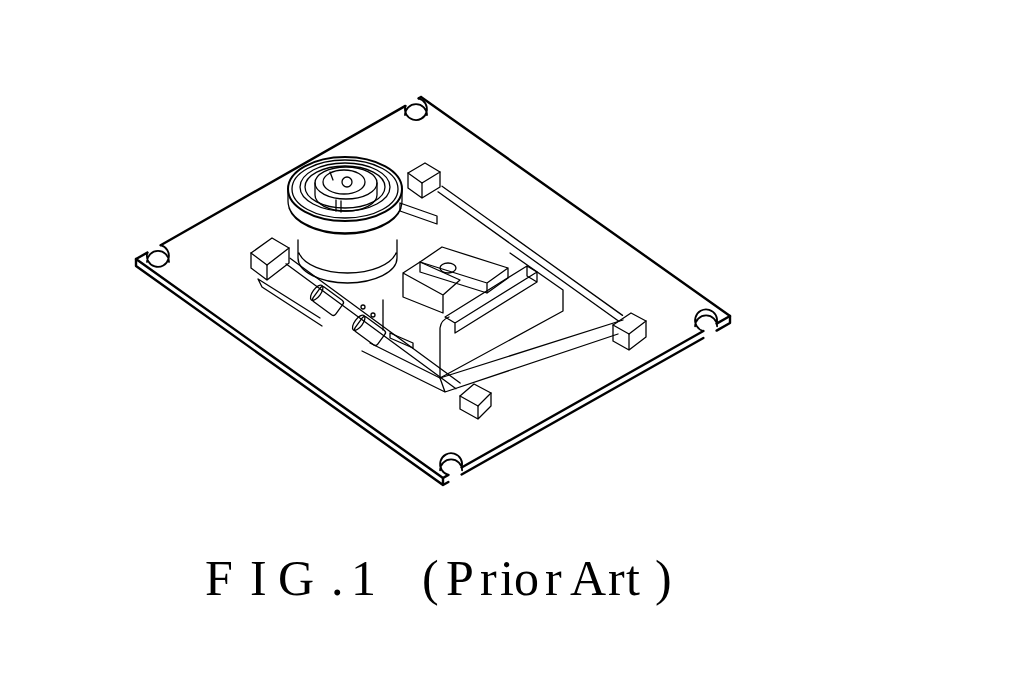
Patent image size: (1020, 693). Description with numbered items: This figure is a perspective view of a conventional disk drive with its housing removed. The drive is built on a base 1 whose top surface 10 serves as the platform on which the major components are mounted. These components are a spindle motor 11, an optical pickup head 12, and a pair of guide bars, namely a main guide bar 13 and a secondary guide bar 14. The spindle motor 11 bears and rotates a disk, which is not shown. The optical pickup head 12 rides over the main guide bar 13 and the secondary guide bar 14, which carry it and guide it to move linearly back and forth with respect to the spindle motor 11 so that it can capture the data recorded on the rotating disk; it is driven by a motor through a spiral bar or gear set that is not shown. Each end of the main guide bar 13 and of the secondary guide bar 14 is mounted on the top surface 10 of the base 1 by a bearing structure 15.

The base 1 is at (647, 275).
The top surface 10 is at (596, 255).
The spindle motor 11 is at (324, 174).
The optical pickup head 12 is at (478, 260).
The main guide bar 13 is at (367, 363).
The secondary guide bar 14 is at (464, 210).
The bearing structure 15 is at (263, 243).